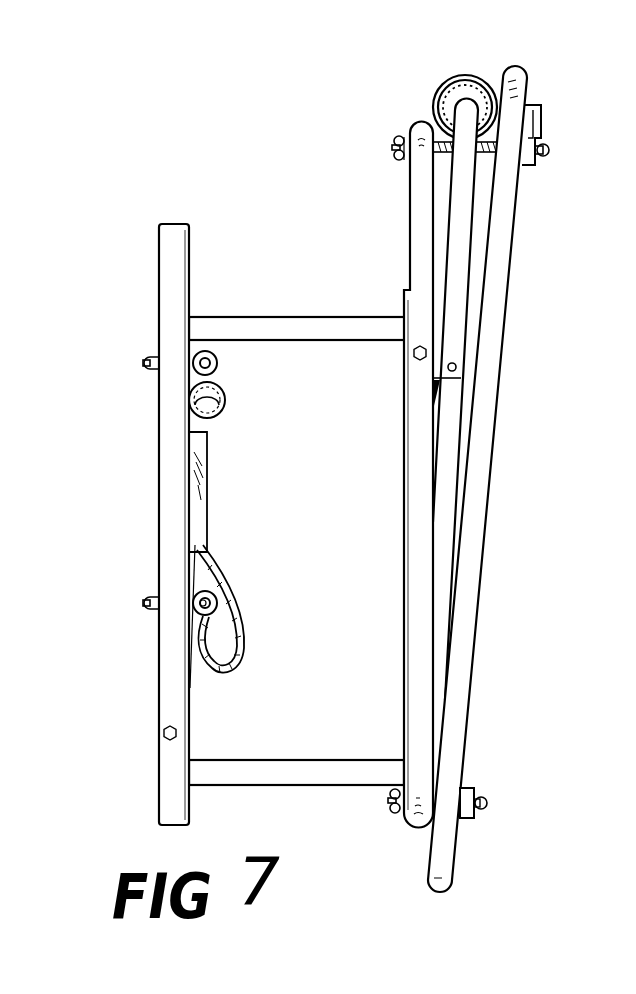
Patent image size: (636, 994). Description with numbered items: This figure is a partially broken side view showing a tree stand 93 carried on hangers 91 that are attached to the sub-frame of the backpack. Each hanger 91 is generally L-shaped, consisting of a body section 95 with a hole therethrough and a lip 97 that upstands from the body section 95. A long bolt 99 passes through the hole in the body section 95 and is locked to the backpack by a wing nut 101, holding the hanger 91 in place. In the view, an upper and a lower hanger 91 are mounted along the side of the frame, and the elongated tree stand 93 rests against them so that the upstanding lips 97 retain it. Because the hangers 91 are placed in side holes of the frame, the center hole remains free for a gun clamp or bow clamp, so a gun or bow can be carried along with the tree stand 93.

The hanger 91 is at (547, 96).
The tree stand 93 is at (483, 421).
The body section 95 is at (527, 168).
The lip 97 is at (546, 118).
The long bolt 99 is at (549, 151).
The wing nut 101 is at (408, 137).